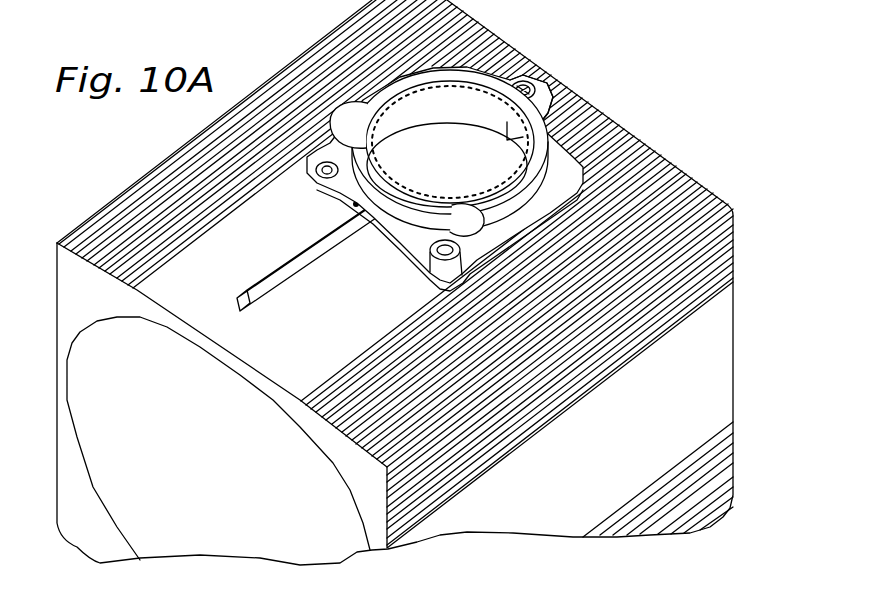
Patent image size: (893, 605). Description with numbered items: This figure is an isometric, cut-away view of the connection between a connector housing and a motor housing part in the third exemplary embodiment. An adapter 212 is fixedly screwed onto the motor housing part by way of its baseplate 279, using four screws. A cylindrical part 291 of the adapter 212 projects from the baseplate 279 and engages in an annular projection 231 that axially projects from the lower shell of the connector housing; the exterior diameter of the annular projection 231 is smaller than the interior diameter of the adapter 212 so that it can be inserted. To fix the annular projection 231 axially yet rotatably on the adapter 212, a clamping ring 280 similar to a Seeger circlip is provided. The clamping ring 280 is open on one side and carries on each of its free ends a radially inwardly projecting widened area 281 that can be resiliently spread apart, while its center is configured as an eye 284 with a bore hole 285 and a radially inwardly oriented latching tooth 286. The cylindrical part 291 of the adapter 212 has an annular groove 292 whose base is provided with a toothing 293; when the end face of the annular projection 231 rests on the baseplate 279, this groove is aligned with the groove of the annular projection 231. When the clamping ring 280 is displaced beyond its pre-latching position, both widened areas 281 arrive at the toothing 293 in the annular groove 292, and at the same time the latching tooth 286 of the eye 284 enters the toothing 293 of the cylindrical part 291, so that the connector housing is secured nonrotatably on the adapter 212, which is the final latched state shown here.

The adapter 212 is at (300, 195).
The annular projection 231 is at (350, 206).
The baseplate 279 is at (598, 150).
The clamping ring 280 is at (562, 97).
The widened area 281 is at (477, 217).
The eye 284 is at (517, 115).
The bore hole 285 is at (524, 85).
The latching tooth 286 is at (420, 82).
The cylindrical part 291 is at (520, 132).
The annular groove 292 is at (383, 227).
The toothing 293 is at (433, 226).